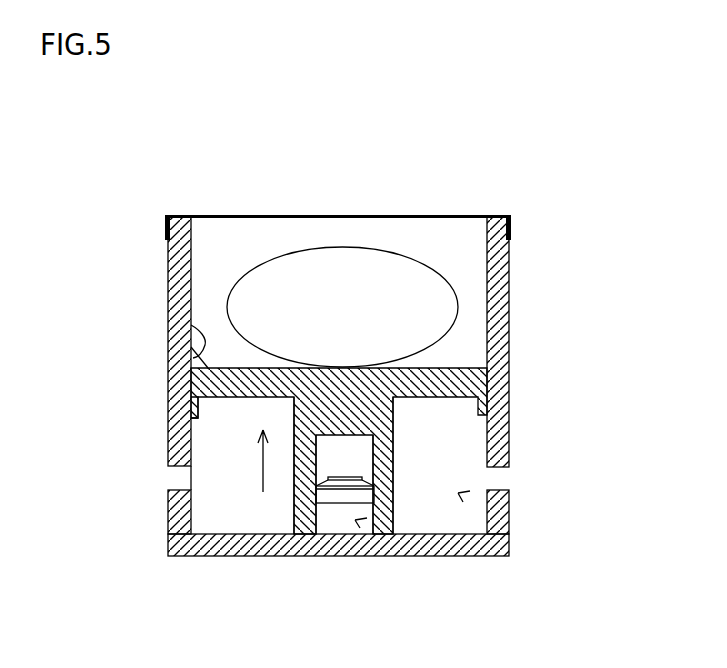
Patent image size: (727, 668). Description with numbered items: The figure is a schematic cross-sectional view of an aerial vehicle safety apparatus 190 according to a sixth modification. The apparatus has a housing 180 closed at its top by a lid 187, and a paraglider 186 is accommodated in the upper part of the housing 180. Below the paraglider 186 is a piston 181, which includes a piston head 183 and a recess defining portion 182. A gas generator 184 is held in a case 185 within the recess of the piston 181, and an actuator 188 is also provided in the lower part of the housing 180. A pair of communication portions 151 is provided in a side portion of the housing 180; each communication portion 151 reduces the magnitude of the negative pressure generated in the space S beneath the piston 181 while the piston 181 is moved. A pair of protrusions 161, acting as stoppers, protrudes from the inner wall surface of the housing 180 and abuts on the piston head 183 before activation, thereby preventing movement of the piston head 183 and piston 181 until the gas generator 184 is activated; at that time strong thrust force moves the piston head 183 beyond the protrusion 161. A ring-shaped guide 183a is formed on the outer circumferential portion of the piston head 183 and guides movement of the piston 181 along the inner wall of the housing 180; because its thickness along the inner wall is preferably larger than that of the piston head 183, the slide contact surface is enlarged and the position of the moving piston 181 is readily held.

The aerial vehicle safety apparatus 190 is at (147, 209).
The housing 180 is at (502, 282).
The lid 187 is at (437, 217).
The paraglider 186 is at (415, 294).
The piston 181 is at (370, 451).
The piston head 183 is at (463, 383).
The guide 183a is at (196, 400).
The recess defining portion 182 is at (383, 455).
The protrusion 161 is at (191, 325).
The communication portion 151 is at (180, 477).
The case 185 is at (363, 498).
The gas generator 184 is at (356, 520).
The actuator 188 is at (459, 493).
The space S is at (227, 507).